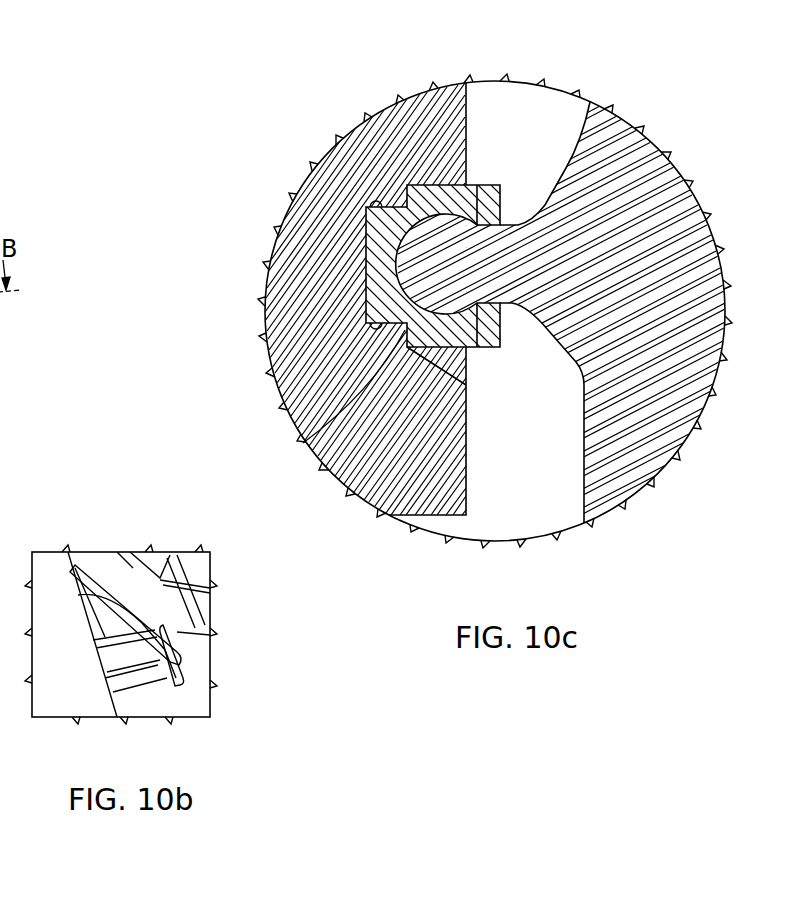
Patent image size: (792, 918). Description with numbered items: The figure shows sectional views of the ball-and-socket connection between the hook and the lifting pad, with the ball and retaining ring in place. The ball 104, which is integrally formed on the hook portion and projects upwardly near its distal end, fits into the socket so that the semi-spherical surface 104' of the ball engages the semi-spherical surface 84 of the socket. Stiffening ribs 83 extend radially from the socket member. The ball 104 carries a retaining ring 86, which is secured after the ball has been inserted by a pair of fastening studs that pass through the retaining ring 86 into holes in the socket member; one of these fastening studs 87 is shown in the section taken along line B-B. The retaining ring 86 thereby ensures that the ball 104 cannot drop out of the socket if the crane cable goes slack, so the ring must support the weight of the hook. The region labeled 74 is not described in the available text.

In FIG. 10c, the open space / chamber 74 is at (561, 135).
In FIG. 10c, the stiffening ribs 83 is at (467, 153).
In FIG. 10c, the semi-spherical surface of the socket 84 is at (605, 222).
In FIG. 10c, the retaining ring 86 is at (494, 348).
In FIG. 10b, the retaining ring 86 is at (167, 675).
In FIG. 10b, the fastening stud 87 is at (183, 662).
In FIG. 10c, the ball 104 is at (354, 299).
In FIG. 10c, the semi-spherical surface of the ball 104' is at (366, 259).